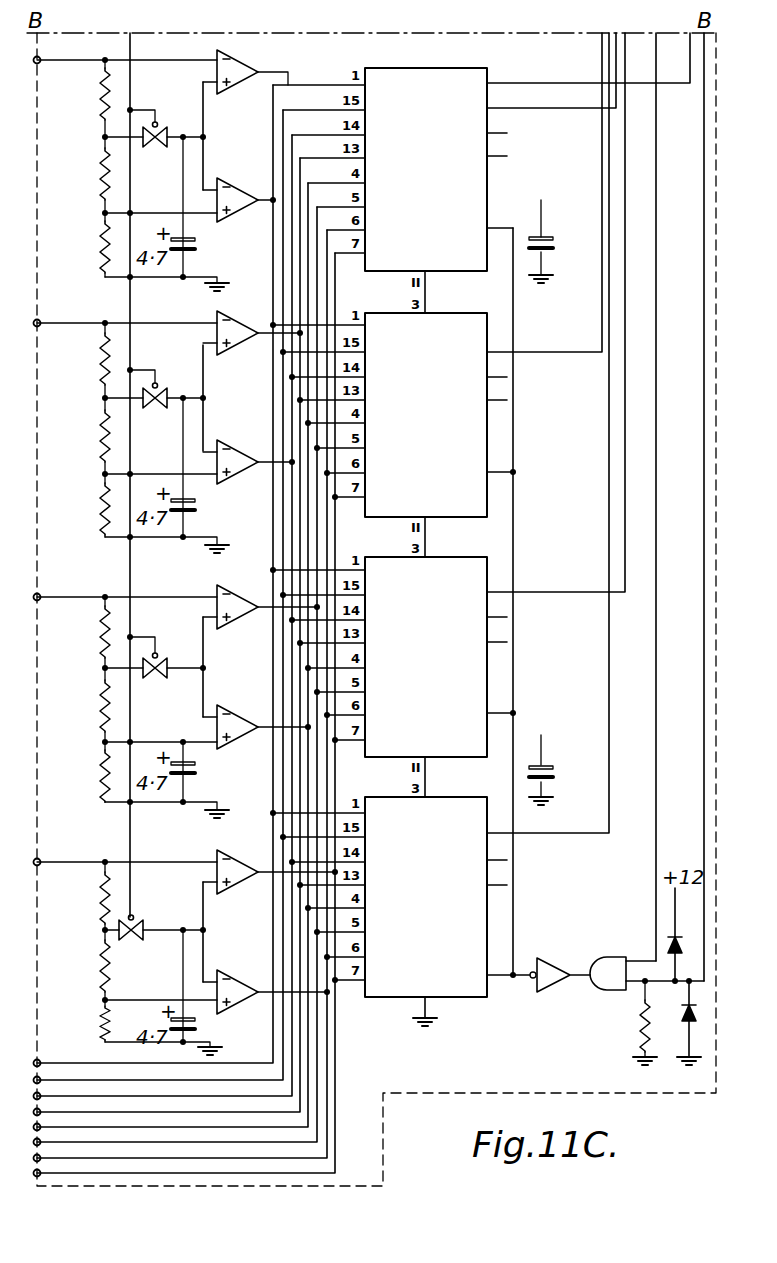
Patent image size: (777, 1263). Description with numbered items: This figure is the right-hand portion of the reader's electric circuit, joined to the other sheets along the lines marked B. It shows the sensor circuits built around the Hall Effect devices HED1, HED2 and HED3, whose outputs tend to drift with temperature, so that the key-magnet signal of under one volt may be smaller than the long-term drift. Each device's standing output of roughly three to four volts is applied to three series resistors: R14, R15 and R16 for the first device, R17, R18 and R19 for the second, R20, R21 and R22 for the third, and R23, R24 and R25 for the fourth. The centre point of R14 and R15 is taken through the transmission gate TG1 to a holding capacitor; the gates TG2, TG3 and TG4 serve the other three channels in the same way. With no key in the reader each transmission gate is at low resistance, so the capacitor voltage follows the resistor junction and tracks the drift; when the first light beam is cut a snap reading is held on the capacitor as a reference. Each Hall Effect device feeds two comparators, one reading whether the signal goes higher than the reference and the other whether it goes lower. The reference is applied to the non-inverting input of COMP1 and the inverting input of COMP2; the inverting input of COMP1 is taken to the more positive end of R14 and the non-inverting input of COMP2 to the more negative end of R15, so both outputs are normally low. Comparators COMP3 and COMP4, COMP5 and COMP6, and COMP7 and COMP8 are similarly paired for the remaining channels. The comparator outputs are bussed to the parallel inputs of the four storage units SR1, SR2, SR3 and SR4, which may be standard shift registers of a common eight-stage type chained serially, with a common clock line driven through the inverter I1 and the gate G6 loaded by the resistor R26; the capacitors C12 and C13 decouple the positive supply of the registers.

The Hall Effect device HED1 is at (126, 72).
The Hall Effect device HED2 is at (126, 312).
The Hall Effect device HED3 is at (126, 718).
The series resistor R14 is at (83, 98).
The series resistor R15 is at (83, 175).
The series resistor R16 is at (83, 245).
The series resistor R17 is at (83, 360).
The series resistor R18 is at (83, 436).
The series resistor R19 is at (83, 505).
The series resistor R20 is at (83, 632).
The series resistor R21 is at (83, 705).
The series resistor R22 is at (83, 772).
The series resistor R23 is at (83, 896).
The series resistor R24 is at (83, 965).
The series resistor R25 is at (83, 1024).
The resistor R26 is at (625, 1023).
The transmission gate TG1 is at (154, 123).
The transmission gate TG2 is at (154, 384).
The transmission gate TG3 is at (154, 653).
The transmission gate TG4 is at (154, 915).
The voltage comparator COMP1 is at (245, 94).
The voltage comparator COMP2 is at (239, 225).
The voltage comparator COMP3 is at (253, 355).
The voltage comparator COMP4 is at (249, 487).
The voltage comparator COMP5 is at (261, 629).
The voltage comparator COMP6 is at (257, 751).
The voltage comparator COMP7 is at (270, 894).
The voltage comparator COMP8 is at (266, 1016).
The storage unit SR1 is at (527, 152).
The storage unit SR2 is at (483, 275).
The storage unit SR3 is at (495, 395).
The storage unit SR4 is at (487, 529).
The capacitor C12 is at (561, 230).
The capacitor C13 is at (561, 758).
The inverter I1 is at (553, 968).
The gate G6 is at (611, 965).